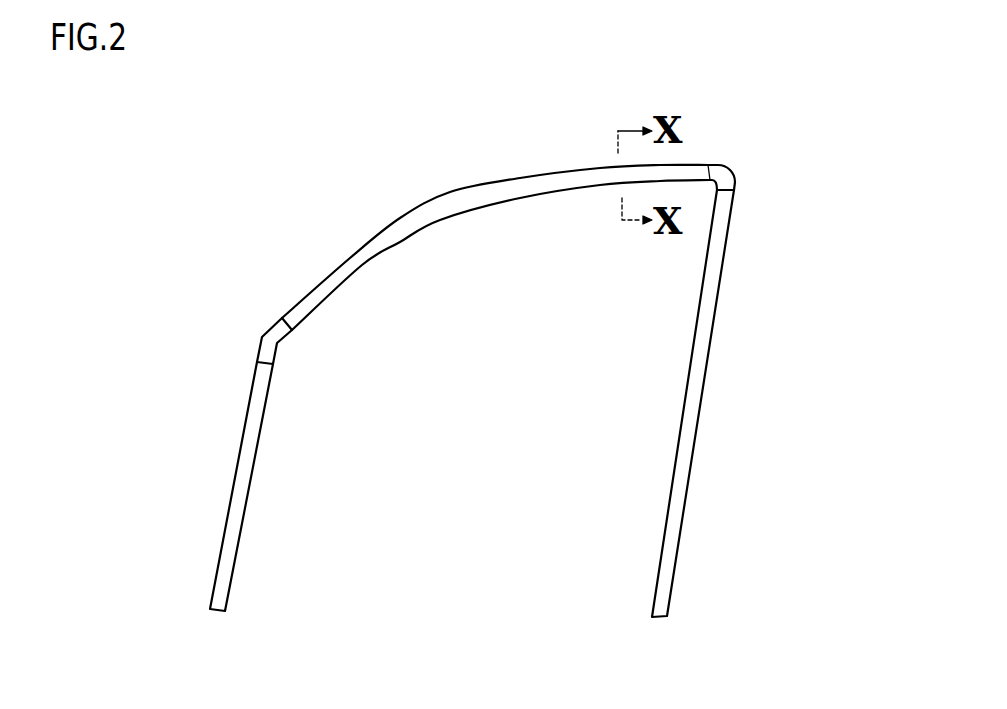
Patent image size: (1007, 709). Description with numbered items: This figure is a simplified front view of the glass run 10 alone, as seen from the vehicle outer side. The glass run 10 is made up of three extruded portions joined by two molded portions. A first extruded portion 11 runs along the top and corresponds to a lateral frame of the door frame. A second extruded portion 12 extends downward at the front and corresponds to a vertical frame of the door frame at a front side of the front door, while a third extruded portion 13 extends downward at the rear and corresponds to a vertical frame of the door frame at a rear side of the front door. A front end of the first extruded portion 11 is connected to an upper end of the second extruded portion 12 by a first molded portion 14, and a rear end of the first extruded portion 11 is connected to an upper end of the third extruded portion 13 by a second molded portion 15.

The glass run 10 is at (400, 216).
The first extruded portion 11 is at (362, 265).
The second extruded portion 12 is at (247, 452).
The third extruded portion 13 is at (682, 472).
The first molded portion 14 is at (267, 343).
The second molded portion 15 is at (730, 175).